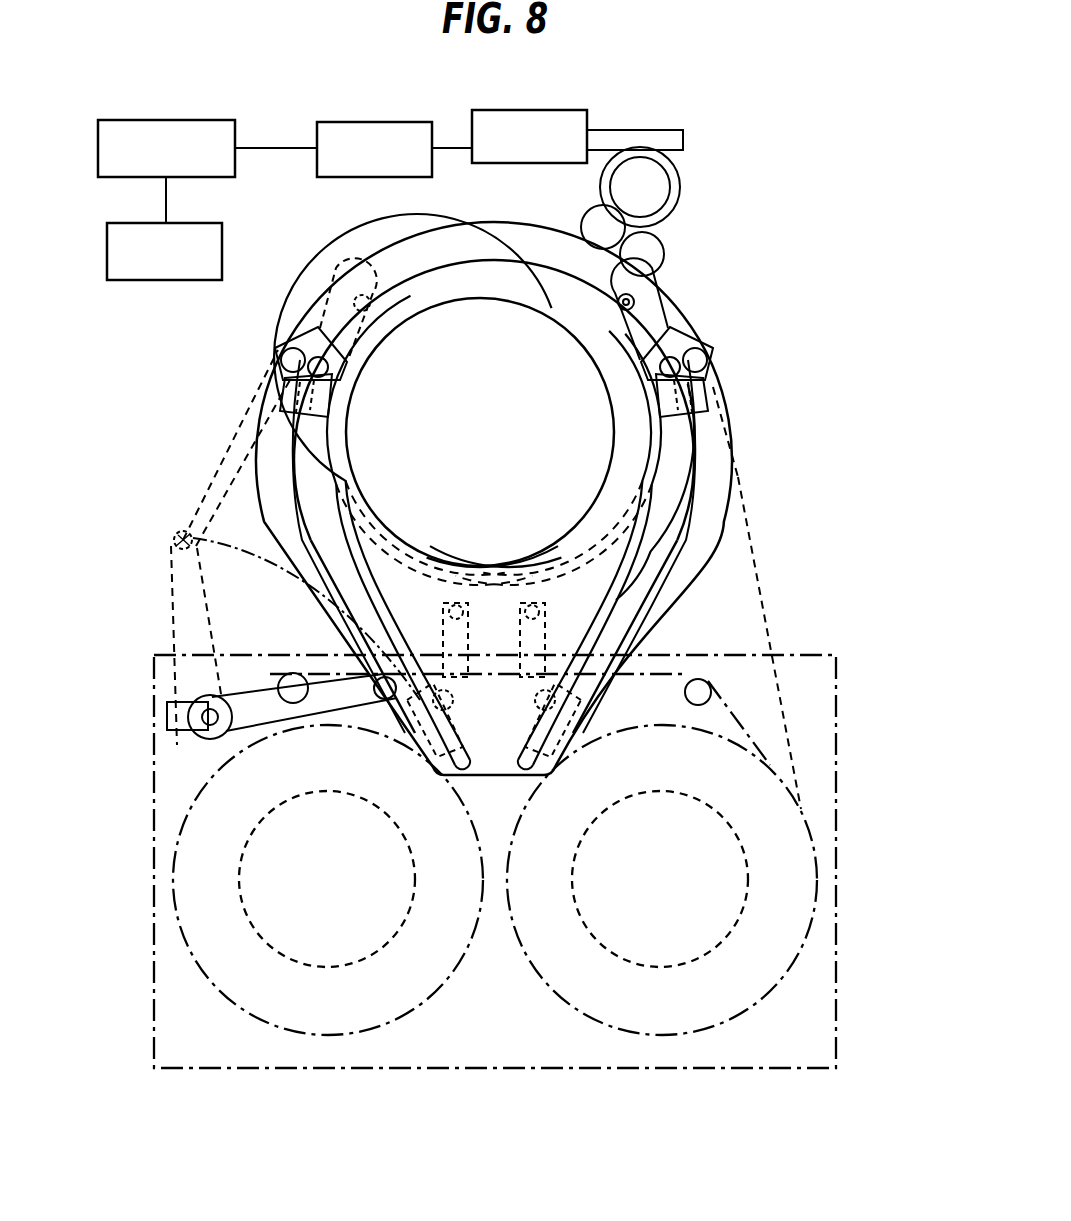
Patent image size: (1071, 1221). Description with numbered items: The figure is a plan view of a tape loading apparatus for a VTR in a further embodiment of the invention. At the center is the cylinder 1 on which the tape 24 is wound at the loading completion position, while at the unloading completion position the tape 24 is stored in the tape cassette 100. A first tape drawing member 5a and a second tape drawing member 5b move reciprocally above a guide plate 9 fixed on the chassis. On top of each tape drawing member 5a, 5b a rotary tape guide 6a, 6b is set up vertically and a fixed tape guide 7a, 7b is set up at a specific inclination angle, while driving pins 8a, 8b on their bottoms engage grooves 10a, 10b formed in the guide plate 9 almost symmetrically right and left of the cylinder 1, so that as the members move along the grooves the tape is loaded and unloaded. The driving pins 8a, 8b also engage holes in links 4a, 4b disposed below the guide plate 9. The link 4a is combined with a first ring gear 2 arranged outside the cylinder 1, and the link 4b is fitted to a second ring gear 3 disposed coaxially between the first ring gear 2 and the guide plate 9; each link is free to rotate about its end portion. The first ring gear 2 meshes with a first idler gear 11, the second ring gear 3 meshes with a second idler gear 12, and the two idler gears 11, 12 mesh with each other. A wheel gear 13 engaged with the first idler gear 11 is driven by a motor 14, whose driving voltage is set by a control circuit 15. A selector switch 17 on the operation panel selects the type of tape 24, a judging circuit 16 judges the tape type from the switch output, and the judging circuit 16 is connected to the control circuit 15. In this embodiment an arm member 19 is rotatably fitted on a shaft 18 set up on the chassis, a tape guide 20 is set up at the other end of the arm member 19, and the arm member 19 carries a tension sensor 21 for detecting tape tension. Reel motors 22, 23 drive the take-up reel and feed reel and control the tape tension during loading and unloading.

The cylinder 1 is at (410, 284).
The first ring gear 2 is at (452, 227).
The second ring gear 3 is at (562, 550).
The link 4a is at (336, 266).
The link 4b is at (662, 300).
The first tape drawing member 5a is at (275, 345).
The second tape drawing member 5b is at (700, 345).
The rotary tape guide 6a is at (286, 365).
The rotary tape guide 6b is at (712, 370).
The fixed tape guide 7a is at (302, 342).
The fixed tape guide 7b is at (662, 364).
The driving pin 8a is at (284, 418).
The driving pin 8b is at (708, 398).
The guide plate 9 is at (246, 508).
The groove 10a is at (443, 640).
The groove 10b is at (580, 640).
The first idler gear 11 is at (583, 224).
The second idler gear 12 is at (664, 253).
The wheel gear 13 is at (678, 170).
The motor 14 is at (472, 128).
The control circuit 15 is at (317, 130).
The judging circuit 16 is at (98, 135).
The selector switch 17 is at (107, 243).
The shaft 18 is at (198, 738).
The arm member 19 is at (288, 675).
The tape guide 20 is at (378, 678).
The tension sensor 21 is at (166, 712).
The reel motor 22 is at (390, 942).
The reel motor 23 is at (593, 940).
The tape 24 is at (762, 540).
The tape cassette 100 is at (838, 714).